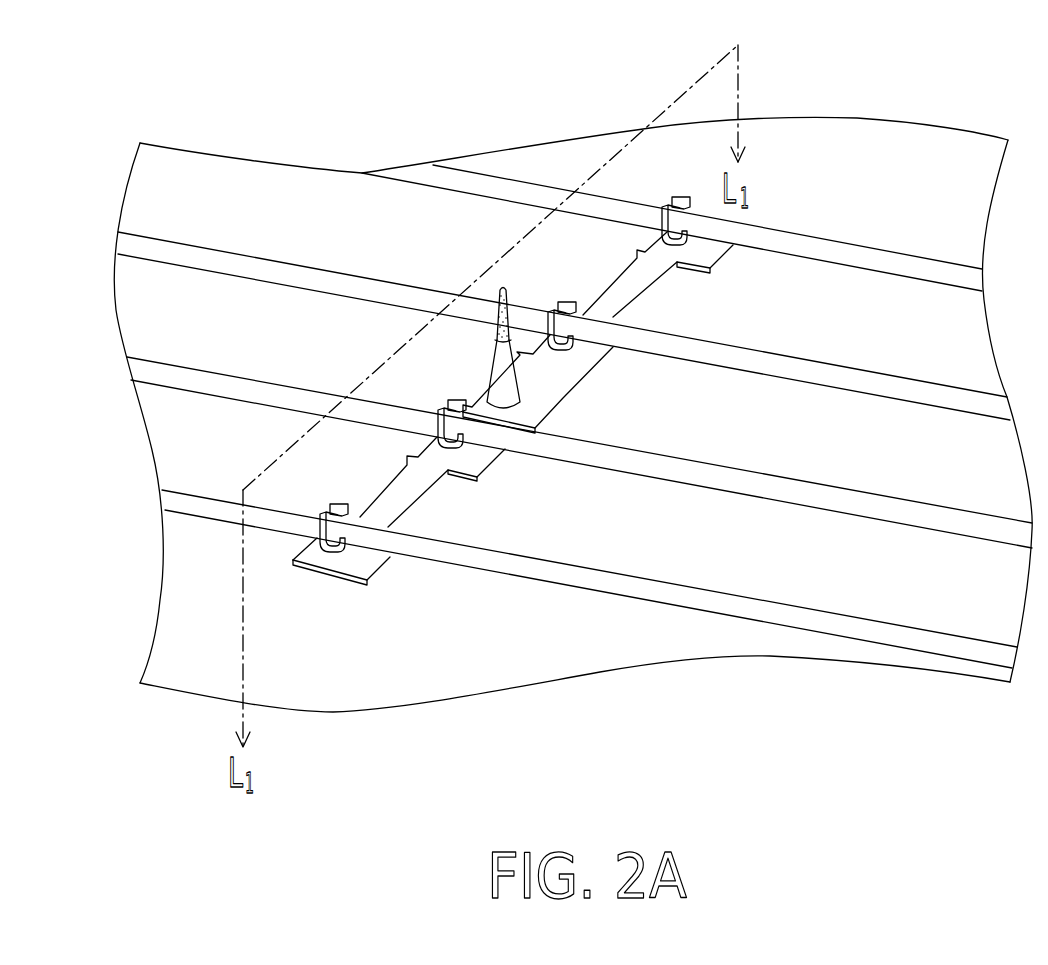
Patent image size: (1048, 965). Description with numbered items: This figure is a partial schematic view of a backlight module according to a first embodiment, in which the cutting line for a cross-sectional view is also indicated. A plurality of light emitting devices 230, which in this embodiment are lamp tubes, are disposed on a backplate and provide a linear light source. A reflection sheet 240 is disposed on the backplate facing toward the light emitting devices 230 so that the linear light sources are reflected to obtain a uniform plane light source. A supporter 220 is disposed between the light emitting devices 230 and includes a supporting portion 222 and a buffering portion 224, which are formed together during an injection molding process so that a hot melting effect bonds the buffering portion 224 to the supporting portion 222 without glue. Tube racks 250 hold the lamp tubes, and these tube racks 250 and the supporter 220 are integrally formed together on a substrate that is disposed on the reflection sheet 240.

The supporter 220 is at (425, 210).
The supporting portion 222 is at (490, 367).
The buffering portion 224 is at (503, 288).
The light emitting devices 230 is at (178, 500).
The reflection sheet 240 is at (207, 597).
The tube racks 250 is at (317, 527).